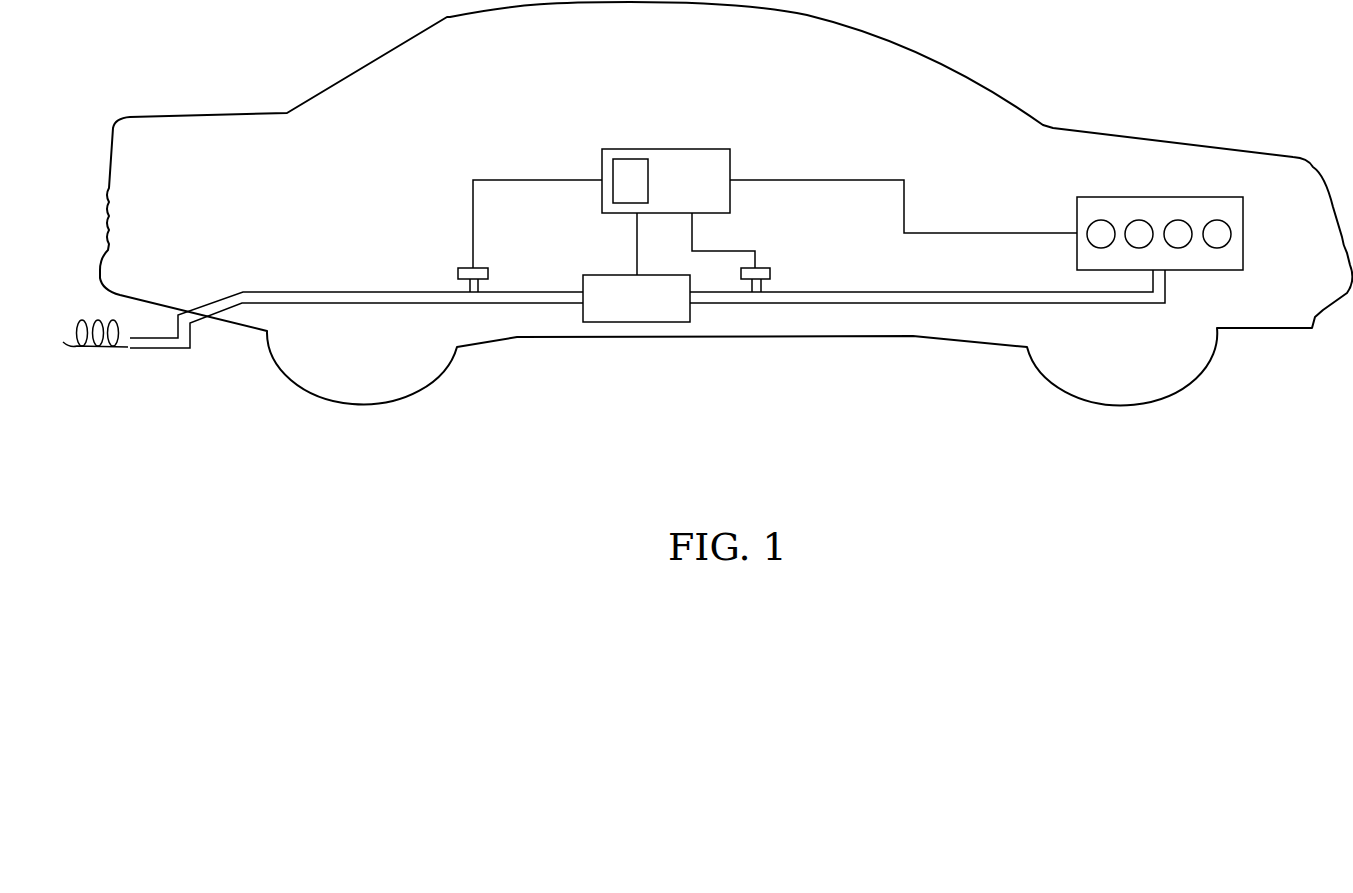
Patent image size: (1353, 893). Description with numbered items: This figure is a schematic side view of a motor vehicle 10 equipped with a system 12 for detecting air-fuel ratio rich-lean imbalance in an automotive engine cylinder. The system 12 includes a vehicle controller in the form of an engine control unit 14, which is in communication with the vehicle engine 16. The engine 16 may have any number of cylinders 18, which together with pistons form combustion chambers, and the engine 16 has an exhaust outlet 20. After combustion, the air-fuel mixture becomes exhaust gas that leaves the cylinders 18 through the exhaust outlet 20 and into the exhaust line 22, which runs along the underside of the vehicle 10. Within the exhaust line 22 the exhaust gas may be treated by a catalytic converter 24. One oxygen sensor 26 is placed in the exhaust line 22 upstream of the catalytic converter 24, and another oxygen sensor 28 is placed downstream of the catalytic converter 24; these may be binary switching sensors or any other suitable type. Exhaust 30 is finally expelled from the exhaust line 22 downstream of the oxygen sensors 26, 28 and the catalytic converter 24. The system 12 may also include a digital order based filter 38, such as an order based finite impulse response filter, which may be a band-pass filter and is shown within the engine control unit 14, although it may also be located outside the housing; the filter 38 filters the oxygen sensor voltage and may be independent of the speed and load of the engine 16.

The motor vehicle 10 is at (1243, 97).
The system for detecting air-fuel ratio rich-lean imbalance 12 is at (547, 145).
The engine control unit 14 is at (703, 149).
The vehicle engine 16 is at (1243, 233).
The cylinders 18 is at (1101, 220).
The exhaust outlet 20 is at (1165, 293).
The exhaust line 22 is at (928, 292).
The catalytic converter 24 is at (603, 275).
The oxygen sensor 26 is at (773, 273).
The oxygen sensor 28 is at (458, 273).
The exhaust 30 is at (90, 349).
The digital order based filter 38 is at (632, 159).